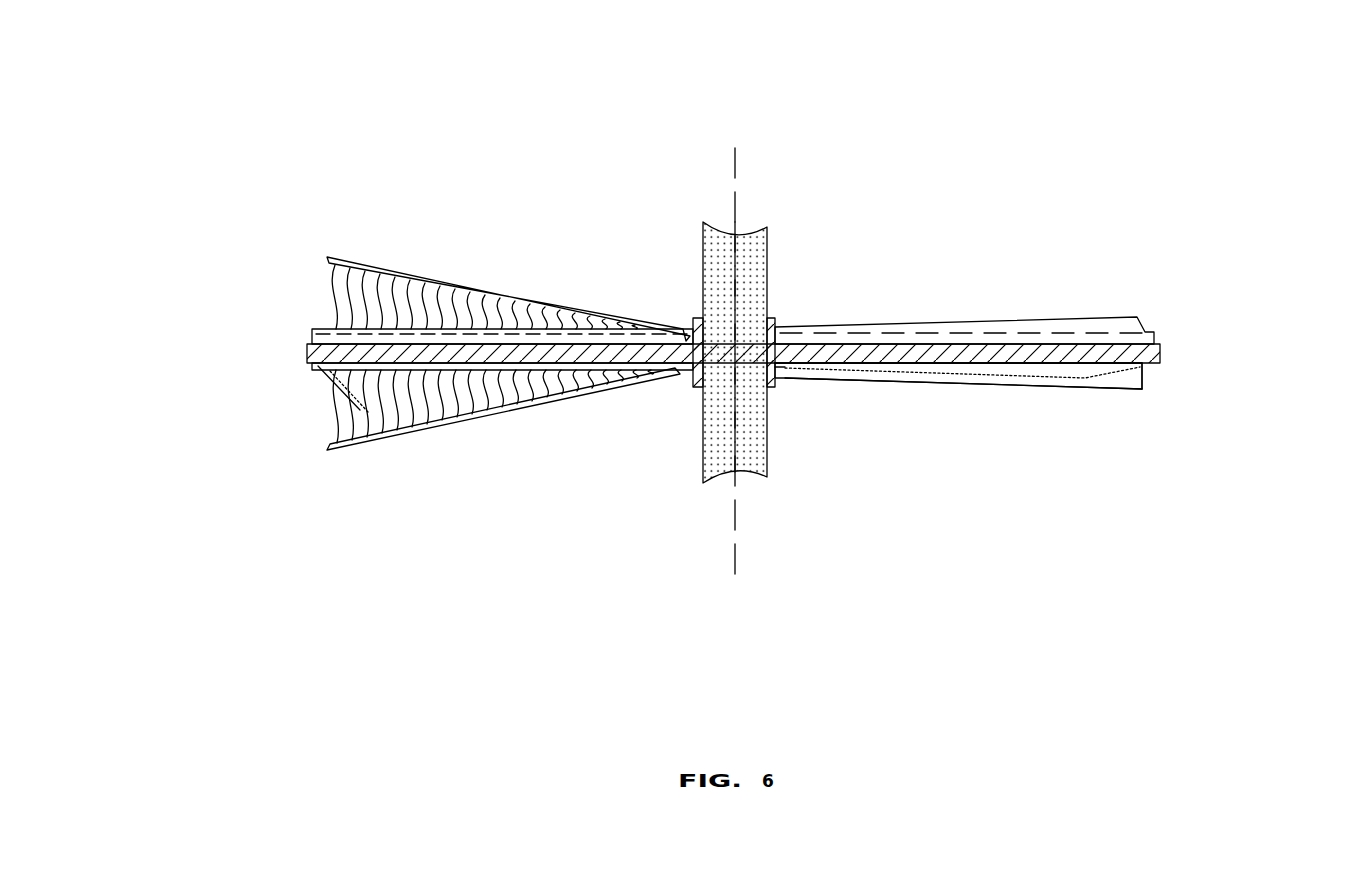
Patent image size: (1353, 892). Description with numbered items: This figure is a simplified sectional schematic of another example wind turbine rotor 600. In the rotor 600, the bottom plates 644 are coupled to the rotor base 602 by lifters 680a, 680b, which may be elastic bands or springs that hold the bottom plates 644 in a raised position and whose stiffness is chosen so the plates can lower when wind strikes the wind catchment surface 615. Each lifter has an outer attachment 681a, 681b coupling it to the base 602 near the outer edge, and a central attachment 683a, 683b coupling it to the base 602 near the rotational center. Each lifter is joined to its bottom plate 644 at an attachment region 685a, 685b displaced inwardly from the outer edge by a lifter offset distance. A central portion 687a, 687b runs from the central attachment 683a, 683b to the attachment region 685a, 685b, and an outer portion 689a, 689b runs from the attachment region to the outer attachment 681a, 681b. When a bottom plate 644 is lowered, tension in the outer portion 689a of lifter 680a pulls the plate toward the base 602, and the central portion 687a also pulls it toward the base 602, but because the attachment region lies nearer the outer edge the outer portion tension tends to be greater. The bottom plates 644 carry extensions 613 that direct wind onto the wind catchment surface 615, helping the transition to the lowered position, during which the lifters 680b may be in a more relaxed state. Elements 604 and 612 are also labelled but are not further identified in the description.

The wind turbine rotor 600 is at (318, 115).
The base 602 is at (1163, 352).
The tissue wall 604 is at (737, 278).
The outer sheath 612 is at (1058, 307).
The extensions 613 is at (457, 280).
The wind catchment surface 615 is at (480, 305).
The bottom plates 644 is at (1103, 392).
The lifter 680a is at (358, 405).
The lifter 680b is at (927, 376).
The outer attachment 681a is at (317, 368).
The outer attachment 681b is at (1163, 362).
The central attachment 683a is at (680, 373).
The central attachment 683b is at (785, 365).
The attachment region 685a is at (366, 440).
The attachment region 685b is at (1085, 377).
The central portion 687a is at (425, 412).
The central portion 687b is at (1007, 372).
The outer portion 689a is at (333, 377).
The outer portion 689b is at (1120, 375).